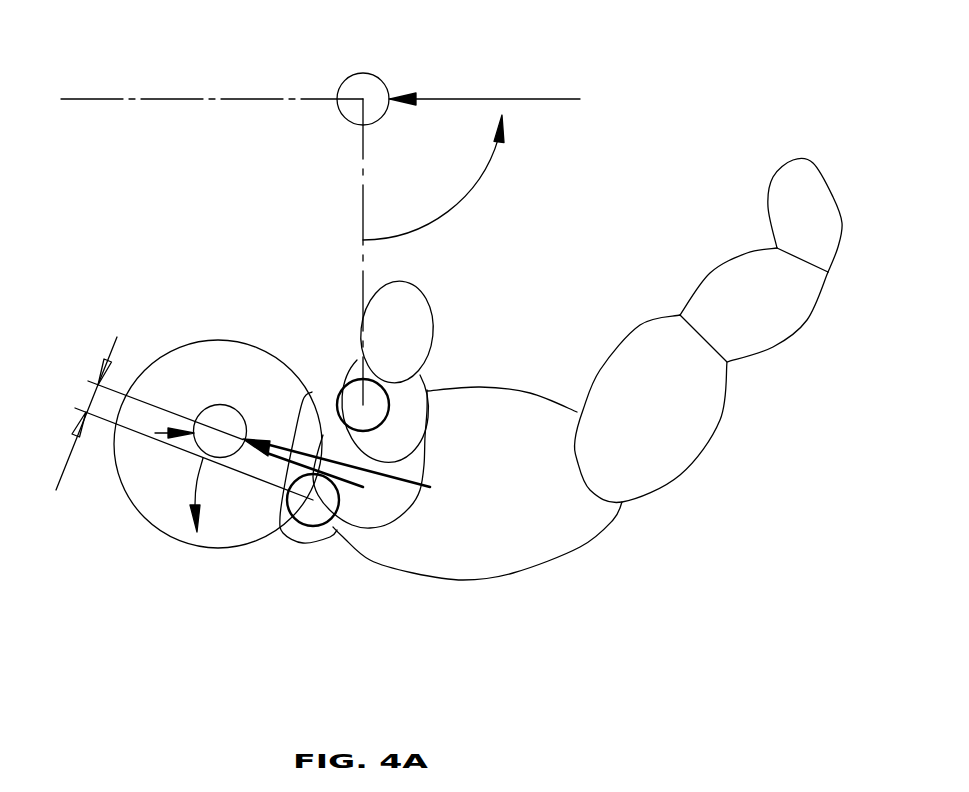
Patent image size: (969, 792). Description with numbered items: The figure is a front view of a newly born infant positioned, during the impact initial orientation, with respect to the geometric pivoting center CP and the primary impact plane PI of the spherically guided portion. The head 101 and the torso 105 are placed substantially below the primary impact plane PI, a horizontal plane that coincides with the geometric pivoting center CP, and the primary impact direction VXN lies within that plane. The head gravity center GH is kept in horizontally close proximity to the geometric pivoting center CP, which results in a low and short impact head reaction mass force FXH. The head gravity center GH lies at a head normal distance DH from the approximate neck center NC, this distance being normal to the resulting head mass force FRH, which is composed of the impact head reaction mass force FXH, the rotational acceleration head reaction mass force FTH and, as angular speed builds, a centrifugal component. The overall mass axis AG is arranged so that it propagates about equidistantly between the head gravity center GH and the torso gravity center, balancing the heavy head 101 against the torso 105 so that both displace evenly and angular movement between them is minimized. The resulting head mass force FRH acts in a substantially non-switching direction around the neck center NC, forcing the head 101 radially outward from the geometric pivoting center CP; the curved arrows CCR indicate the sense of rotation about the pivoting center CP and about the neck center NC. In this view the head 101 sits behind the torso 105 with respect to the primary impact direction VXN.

The primary impact plane PI is at (183, 97).
The geometric pivoting center CP is at (348, 77).
The primary impact direction VXN is at (557, 99).
The overall mass axis AG is at (362, 200).
The counter-clockwise rotation CCR is at (478, 177).
The impact head reaction mass force FXH is at (178, 428).
The head gravity center GH is at (225, 405).
The head normal distance DH is at (174, 418).
The head 101 is at (217, 540).
The neck center NC is at (319, 518).
The resulting head mass force FRH is at (347, 482).
The rotational acceleration head reaction mass force FTH is at (407, 475).
The torso 105 is at (512, 558).